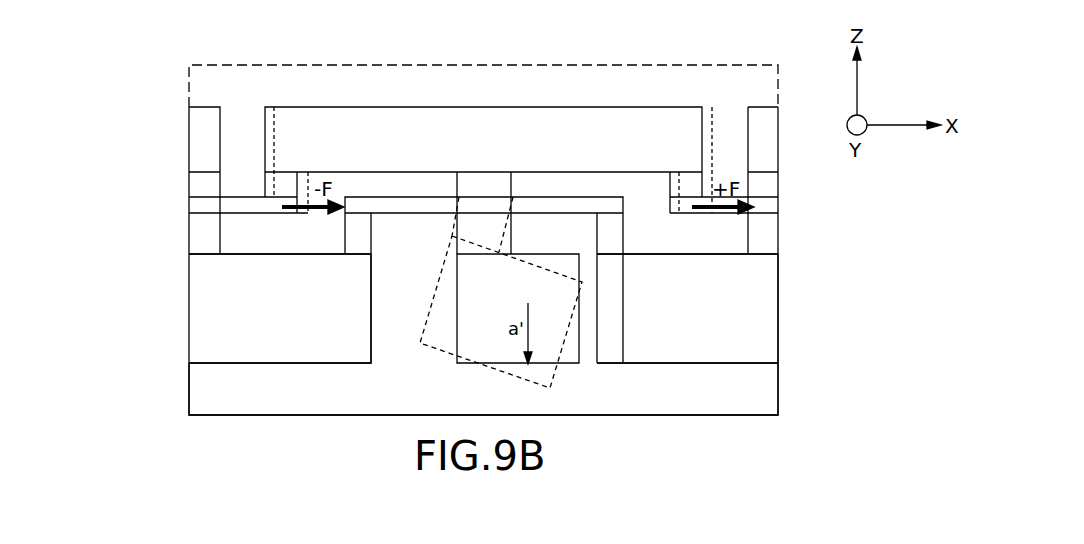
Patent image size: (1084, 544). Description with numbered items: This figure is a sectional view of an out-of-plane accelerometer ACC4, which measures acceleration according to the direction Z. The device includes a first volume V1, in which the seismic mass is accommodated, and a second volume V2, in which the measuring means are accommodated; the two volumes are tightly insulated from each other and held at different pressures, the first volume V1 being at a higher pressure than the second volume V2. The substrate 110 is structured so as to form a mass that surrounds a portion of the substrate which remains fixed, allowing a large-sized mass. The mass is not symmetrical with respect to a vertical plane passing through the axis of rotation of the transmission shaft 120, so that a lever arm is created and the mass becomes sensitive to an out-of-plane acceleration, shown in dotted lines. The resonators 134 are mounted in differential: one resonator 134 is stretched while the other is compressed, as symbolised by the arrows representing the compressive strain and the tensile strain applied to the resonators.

The resonator 134 is at (244, 207).
The transmission shaft 120 is at (530, 187).
The substrate 110 is at (203, 317).
The first volume V1 is at (290, 397).
The second volume V2 is at (622, 92).
The out-of-plane accelerometer ACC4 is at (166, 97).